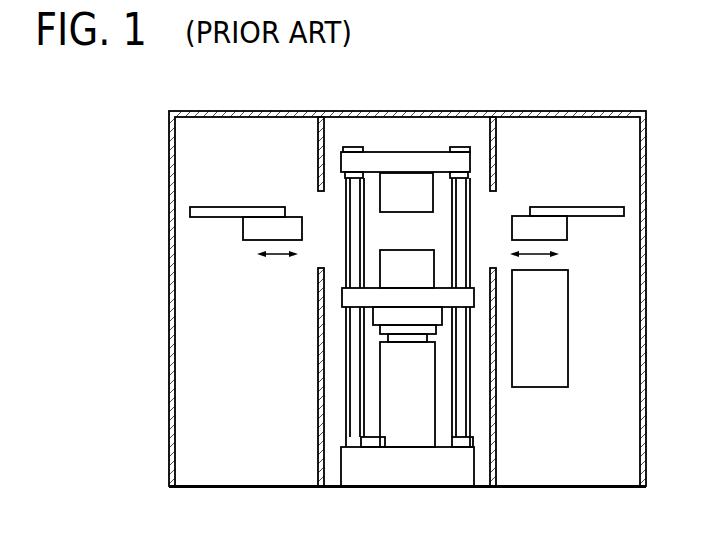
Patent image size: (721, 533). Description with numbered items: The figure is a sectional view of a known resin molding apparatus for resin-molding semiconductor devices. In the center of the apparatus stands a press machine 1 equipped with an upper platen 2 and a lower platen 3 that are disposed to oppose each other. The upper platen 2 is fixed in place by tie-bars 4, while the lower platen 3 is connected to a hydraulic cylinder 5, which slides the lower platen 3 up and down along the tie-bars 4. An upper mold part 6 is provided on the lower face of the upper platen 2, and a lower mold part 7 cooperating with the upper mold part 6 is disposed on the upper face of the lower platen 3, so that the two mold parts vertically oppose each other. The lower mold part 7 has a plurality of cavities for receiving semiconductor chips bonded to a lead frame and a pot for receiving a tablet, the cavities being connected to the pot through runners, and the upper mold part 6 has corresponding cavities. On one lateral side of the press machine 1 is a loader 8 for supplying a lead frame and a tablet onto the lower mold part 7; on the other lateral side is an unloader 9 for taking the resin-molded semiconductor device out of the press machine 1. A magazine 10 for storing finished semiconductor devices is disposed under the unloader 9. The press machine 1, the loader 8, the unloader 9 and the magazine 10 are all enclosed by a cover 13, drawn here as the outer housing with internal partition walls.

The press machine 1 is at (349, 146).
The upper platen 2 is at (442, 157).
The lower platen 3 is at (345, 300).
The tie-bars 4 is at (353, 348).
The hydraulic cylinder 5 is at (406, 435).
The upper mold part 6 is at (413, 185).
The lower mold part 7 is at (396, 256).
The loader 8 is at (248, 207).
The unloader 9 is at (608, 207).
The magazine 10 is at (553, 333).
The cover 13 is at (533, 112).